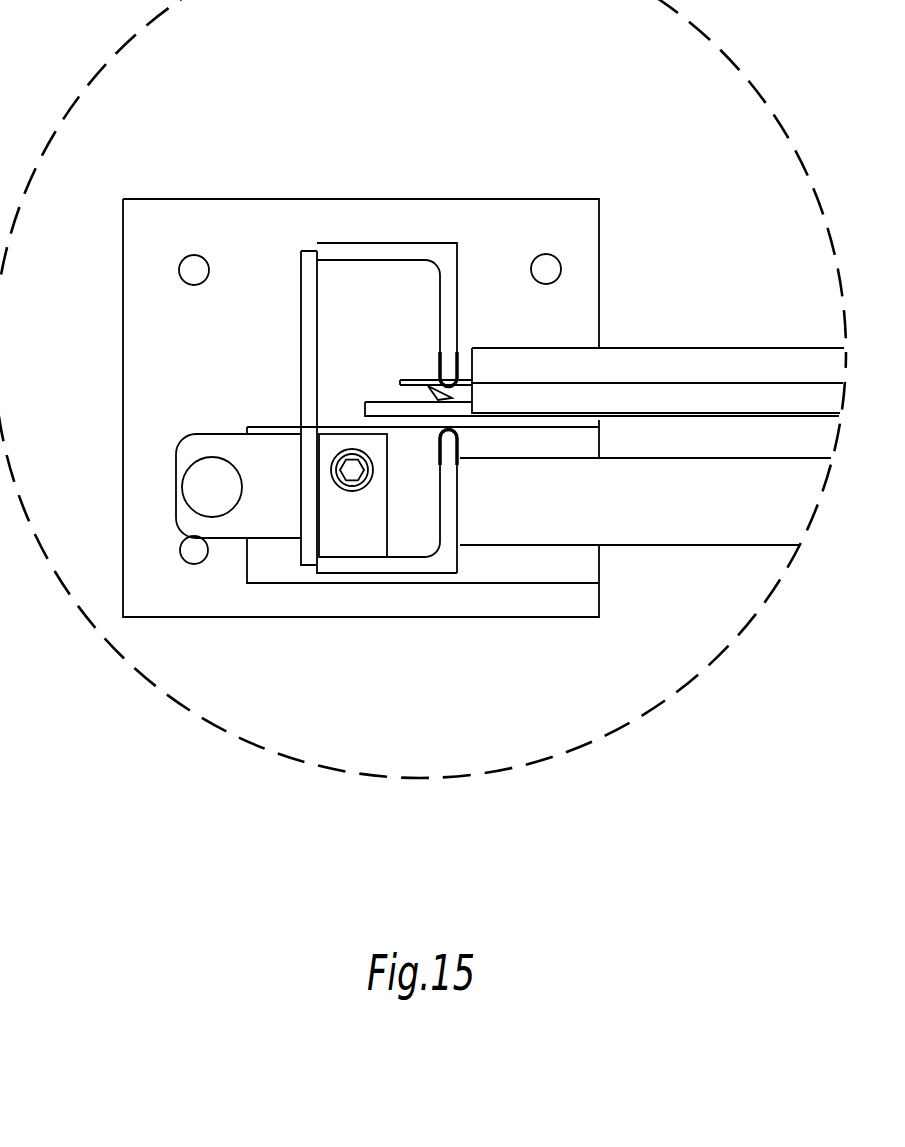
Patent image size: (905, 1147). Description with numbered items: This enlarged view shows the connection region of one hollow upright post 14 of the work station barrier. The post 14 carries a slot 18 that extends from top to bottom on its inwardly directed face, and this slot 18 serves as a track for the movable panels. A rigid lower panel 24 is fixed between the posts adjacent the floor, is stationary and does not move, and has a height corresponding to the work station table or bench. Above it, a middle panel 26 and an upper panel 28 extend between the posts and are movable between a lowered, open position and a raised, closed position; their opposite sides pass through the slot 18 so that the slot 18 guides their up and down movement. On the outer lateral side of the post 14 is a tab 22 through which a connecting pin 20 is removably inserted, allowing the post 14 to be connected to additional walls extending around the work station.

The upright post 14 is at (368, 570).
The slot 18 is at (427, 391).
The connecting pin 20 is at (193, 484).
The tab 22 is at (224, 444).
The lower panel 24 is at (705, 530).
The middle panel 26 is at (635, 397).
The upper panel 28 is at (760, 360).